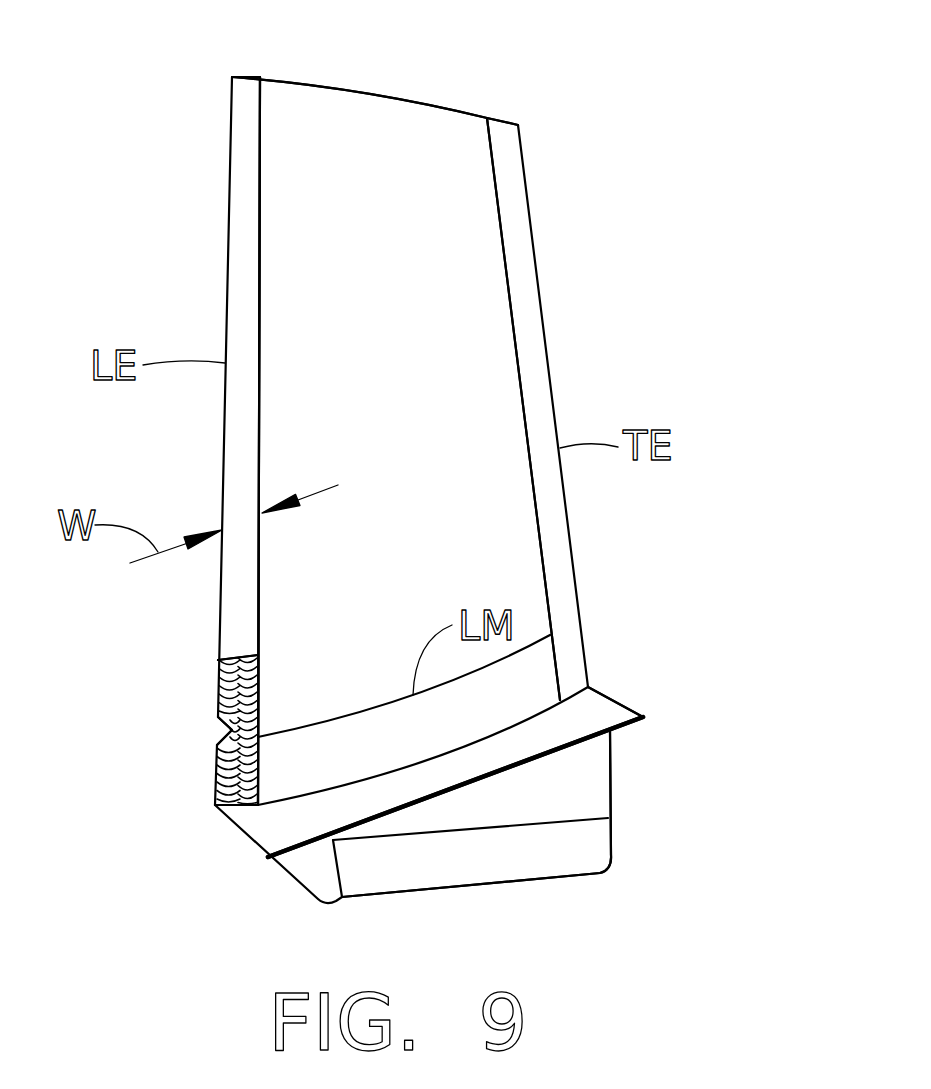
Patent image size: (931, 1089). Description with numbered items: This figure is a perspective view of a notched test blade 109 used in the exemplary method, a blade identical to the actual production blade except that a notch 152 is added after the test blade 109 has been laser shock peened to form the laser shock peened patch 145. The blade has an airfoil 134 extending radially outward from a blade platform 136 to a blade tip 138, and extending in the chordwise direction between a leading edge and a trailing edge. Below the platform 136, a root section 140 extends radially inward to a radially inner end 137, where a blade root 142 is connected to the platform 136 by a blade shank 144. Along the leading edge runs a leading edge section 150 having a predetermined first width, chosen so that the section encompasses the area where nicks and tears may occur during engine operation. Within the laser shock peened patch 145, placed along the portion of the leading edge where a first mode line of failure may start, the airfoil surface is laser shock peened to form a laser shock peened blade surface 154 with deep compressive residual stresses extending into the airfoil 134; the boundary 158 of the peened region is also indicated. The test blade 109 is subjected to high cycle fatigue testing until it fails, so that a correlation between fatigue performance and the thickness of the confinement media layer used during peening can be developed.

The notched test blade 109 is at (573, 112).
The blade tip 138 is at (377, 92).
The airfoil 134 is at (472, 489).
The leading edge section 150 is at (260, 600).
The upper boundary of repaired region 158 is at (245, 665).
The laser shock peened patch 145 is at (218, 690).
The notch 152 is at (230, 731).
The first laser shock peened blade surface 154 is at (258, 765).
The blade platform 136 is at (608, 710).
The blade shank 144 is at (610, 767).
The root section 140 is at (525, 800).
The radially inner end 137 is at (610, 818).
The blade root 142 is at (315, 875).